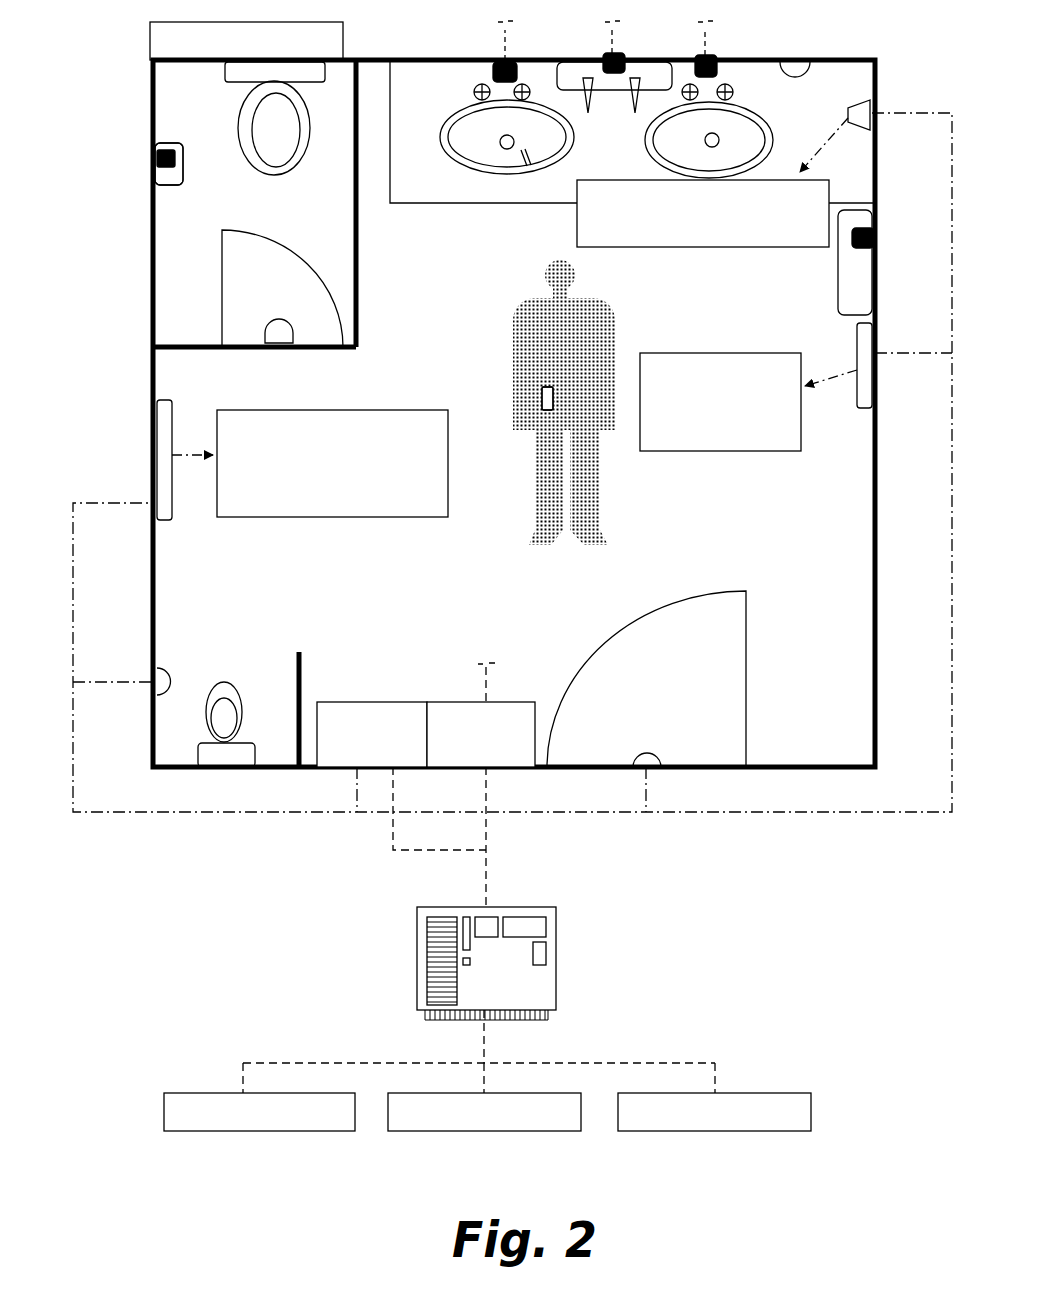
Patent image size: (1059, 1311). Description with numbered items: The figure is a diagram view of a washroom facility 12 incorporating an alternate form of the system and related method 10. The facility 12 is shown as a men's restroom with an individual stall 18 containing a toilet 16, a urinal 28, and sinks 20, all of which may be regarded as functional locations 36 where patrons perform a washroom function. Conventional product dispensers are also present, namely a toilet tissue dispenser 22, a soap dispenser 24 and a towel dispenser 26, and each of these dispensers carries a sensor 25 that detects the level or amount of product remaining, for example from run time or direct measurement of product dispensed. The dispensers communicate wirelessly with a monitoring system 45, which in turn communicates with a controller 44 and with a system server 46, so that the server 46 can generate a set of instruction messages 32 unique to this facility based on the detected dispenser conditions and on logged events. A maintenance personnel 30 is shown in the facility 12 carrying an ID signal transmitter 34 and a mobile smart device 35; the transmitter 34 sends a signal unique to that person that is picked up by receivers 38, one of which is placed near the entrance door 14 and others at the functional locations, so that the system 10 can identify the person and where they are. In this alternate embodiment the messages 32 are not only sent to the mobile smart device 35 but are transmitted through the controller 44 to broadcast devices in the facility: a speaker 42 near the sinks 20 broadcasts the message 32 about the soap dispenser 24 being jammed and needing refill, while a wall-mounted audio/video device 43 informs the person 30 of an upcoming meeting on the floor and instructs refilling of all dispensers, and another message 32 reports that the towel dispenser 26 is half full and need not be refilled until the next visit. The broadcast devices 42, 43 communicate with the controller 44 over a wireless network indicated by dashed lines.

The system and related method 10 is at (133, 41).
The washroom facility 12 is at (881, 506).
The entrance door 14 is at (747, 662).
The toilet 16 is at (306, 160).
The stall 18 is at (359, 225).
The sink 20 is at (452, 165).
The toilet tissue dispenser 22 is at (183, 158).
The soap dispenser 24 is at (612, 90).
The sensor 25 is at (155, 152).
The towel dispenser 26 is at (876, 270).
The urinal 28 is at (243, 714).
The maintenance personnel 30 is at (535, 328).
The message 32 is at (710, 247).
The ID signal transmitter 34 is at (537, 398).
The mobile smart device 35 is at (553, 392).
The functional location 36 is at (511, 183).
The receiver 38 is at (280, 325).
The broadcast device 42 is at (866, 117).
The audio/video device 43 is at (153, 425).
The controller 44 is at (340, 700).
The monitoring system 45 is at (440, 700).
The system server 46 is at (557, 955).